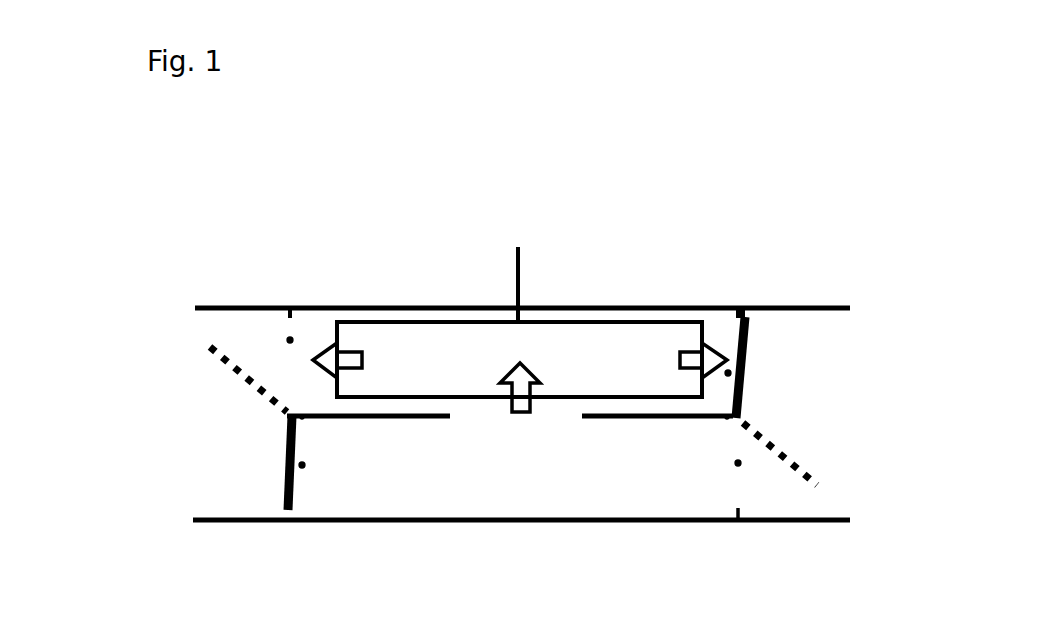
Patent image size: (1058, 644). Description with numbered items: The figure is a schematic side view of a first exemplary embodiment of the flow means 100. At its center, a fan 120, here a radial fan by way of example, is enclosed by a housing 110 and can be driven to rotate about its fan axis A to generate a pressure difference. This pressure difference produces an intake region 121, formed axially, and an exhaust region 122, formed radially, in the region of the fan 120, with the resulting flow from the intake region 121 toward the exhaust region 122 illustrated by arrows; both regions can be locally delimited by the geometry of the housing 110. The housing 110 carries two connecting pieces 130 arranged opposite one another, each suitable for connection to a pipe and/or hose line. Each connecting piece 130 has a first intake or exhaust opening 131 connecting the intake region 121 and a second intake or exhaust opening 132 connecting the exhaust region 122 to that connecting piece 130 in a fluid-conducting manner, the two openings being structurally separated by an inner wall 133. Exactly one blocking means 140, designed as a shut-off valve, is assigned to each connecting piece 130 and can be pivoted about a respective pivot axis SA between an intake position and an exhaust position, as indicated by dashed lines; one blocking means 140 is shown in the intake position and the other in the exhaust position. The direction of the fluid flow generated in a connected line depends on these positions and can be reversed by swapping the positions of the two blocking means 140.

The flow means 100 is at (717, 103).
The housing 110 is at (522, 247).
The fan 120 is at (519, 271).
The intake region 121 is at (538, 440).
The exhaust region 122 is at (310, 372).
The connecting piece 130 is at (533, 364).
The first intake or exhaust opening 131 is at (520, 527).
The second intake or exhaust opening 132 is at (626, 344).
The inner wall 133 is at (514, 505).
The blocking means 140 is at (441, 403).
The fan axis A is at (517, 268).
The pivot axis SA is at (511, 432).